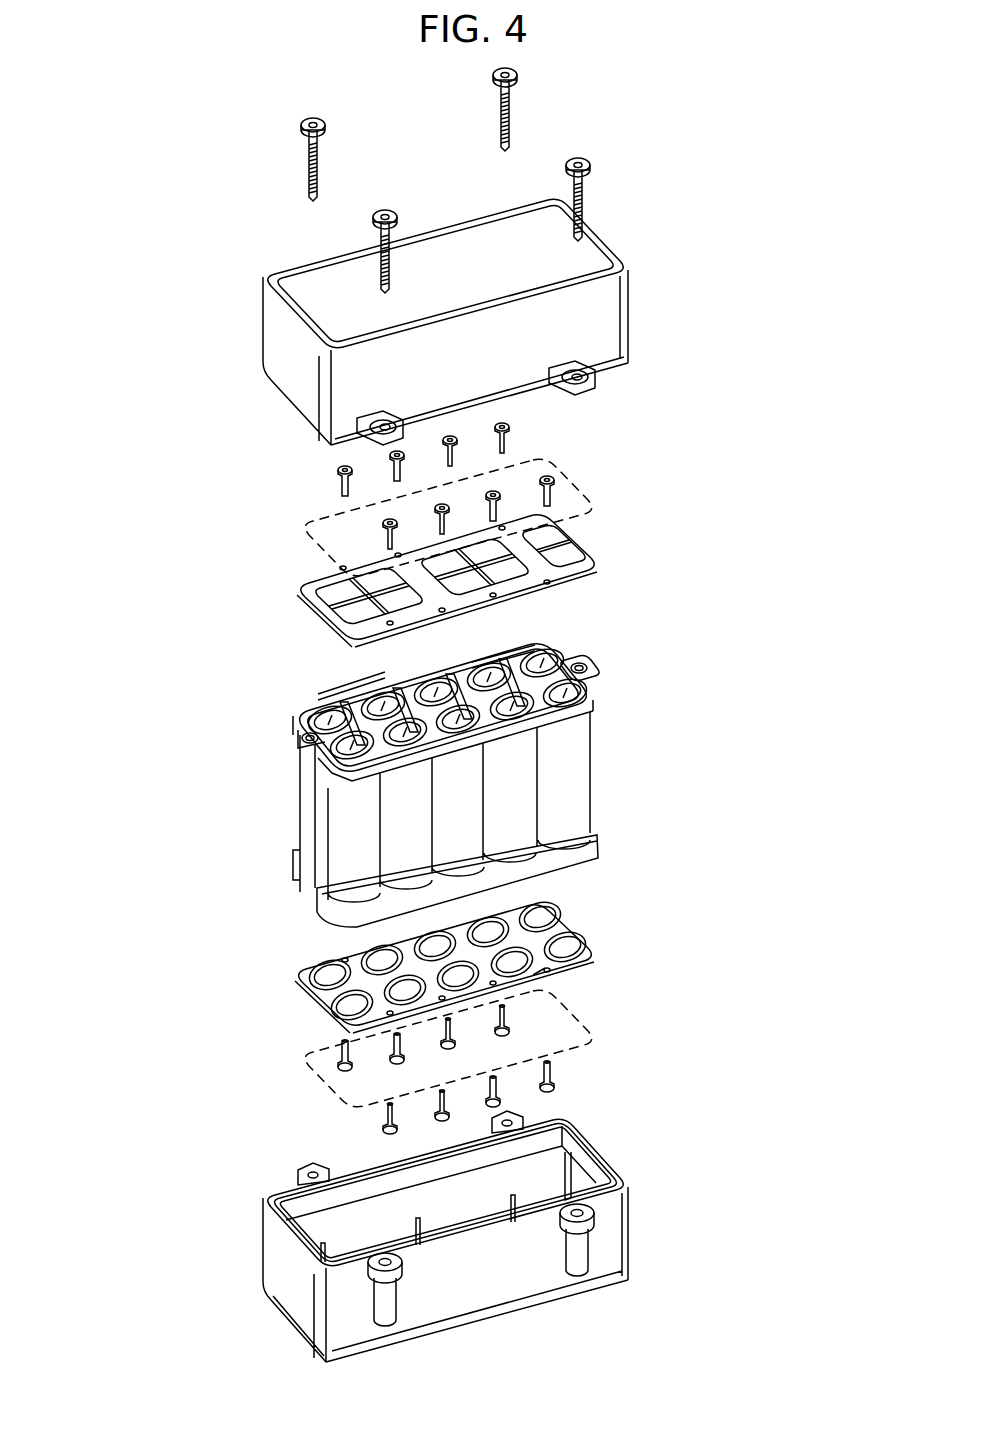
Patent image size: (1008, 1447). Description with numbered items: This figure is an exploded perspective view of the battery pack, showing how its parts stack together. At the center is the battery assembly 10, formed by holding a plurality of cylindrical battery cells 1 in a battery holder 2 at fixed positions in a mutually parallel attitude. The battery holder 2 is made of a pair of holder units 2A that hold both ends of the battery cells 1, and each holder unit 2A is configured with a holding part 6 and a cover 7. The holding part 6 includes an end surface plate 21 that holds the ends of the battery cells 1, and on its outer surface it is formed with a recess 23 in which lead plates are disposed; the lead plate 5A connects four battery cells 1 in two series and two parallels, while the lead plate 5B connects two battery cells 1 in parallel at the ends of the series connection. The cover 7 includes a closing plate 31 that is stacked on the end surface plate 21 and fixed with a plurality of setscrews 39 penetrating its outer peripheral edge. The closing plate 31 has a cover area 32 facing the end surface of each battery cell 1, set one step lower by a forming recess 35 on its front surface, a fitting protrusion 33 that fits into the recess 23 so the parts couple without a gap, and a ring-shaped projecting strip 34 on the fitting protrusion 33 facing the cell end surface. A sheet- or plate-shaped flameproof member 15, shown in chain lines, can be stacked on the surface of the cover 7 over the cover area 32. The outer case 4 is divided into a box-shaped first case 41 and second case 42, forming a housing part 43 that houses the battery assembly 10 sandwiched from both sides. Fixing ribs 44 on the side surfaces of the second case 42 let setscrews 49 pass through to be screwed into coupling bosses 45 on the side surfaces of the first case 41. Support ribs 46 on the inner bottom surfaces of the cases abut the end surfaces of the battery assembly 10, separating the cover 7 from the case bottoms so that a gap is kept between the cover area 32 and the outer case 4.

The battery cell 1 is at (338, 833).
The battery holder 2 is at (517, 781).
The holder unit 2A is at (492, 781).
The outer case 4 is at (376, 715).
The lead plate 5A is at (293, 727).
The lead plate 5B is at (556, 662).
The holding part 6 is at (502, 768).
The cover 7 is at (621, 957).
The battery assembly 10 is at (463, 715).
The flameproof member 15 is at (295, 1068).
The end surface plate 21 is at (597, 847).
The recess 23 is at (308, 703).
The closing plate 31 is at (308, 1000).
The cover area 32 is at (567, 950).
The fitting protrusion 33 is at (538, 958).
The ring-shaped projecting strip 34 is at (570, 943).
The forming recess 35 is at (318, 573).
The setscrew 39 is at (550, 1075).
The first case 41 is at (272, 1263).
The second case 42 is at (272, 345).
The housing part 43 is at (322, 1150).
The fixing rib 44 is at (393, 438).
The coupling boss 45 is at (388, 1300).
The support rib 46 is at (522, 1217).
The setscrew 49 is at (302, 142).